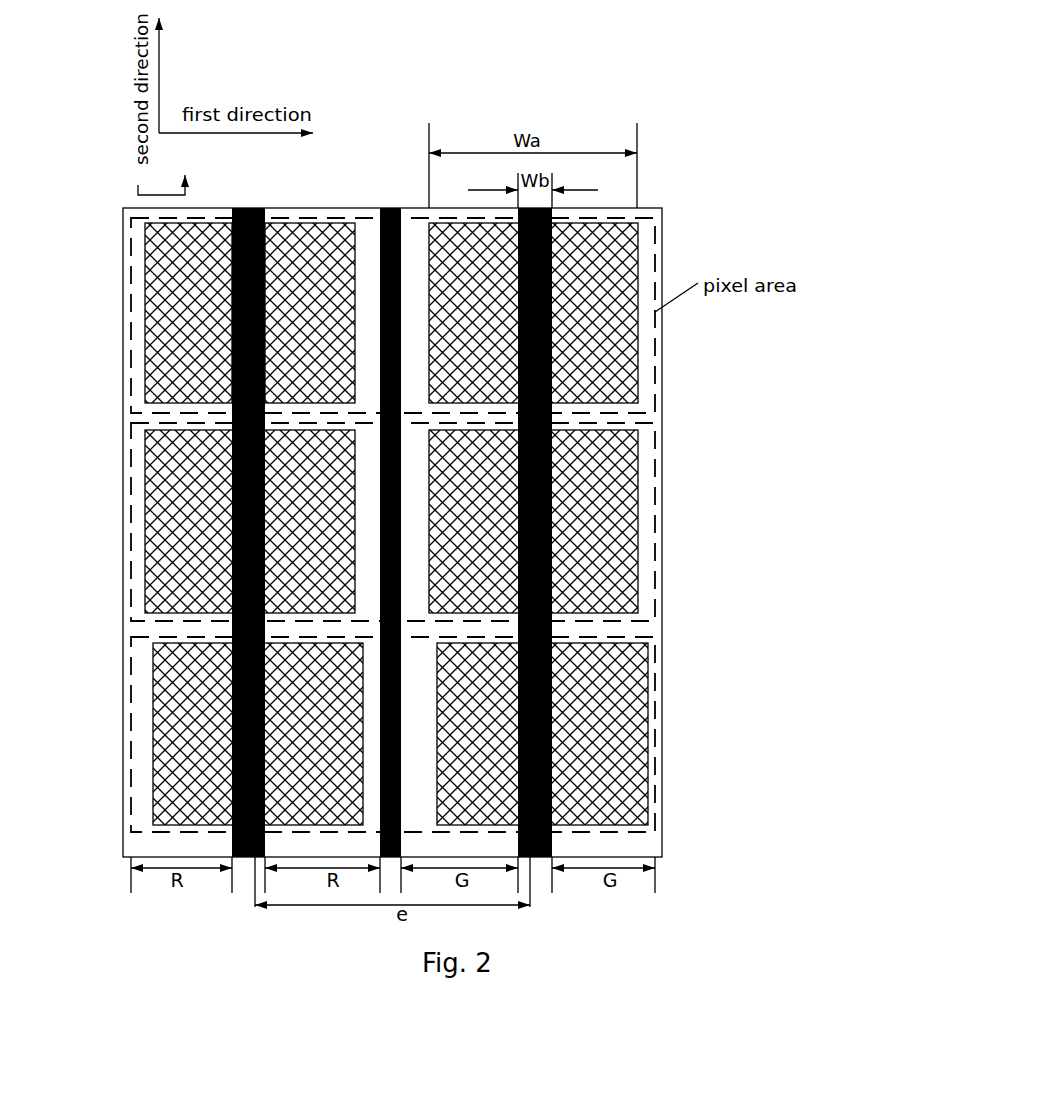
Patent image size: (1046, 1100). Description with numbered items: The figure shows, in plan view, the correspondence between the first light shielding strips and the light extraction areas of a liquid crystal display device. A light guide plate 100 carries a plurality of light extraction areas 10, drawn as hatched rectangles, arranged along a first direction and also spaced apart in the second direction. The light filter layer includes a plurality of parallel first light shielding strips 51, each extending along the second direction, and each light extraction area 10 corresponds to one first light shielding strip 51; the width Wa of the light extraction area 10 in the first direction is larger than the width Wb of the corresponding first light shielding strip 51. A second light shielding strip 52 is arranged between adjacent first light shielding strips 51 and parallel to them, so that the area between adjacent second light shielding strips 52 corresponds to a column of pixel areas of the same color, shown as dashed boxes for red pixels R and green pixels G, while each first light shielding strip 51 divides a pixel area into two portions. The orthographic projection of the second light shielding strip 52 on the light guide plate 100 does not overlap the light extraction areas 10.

The light extraction area 10 is at (160, 242).
The first light shielding strip 51 is at (243, 207).
The second light shielding strip 52 is at (392, 207).
The light guide plate 100 is at (335, 208).